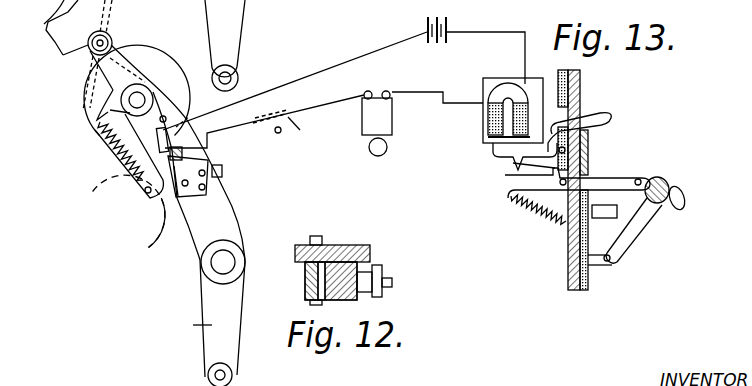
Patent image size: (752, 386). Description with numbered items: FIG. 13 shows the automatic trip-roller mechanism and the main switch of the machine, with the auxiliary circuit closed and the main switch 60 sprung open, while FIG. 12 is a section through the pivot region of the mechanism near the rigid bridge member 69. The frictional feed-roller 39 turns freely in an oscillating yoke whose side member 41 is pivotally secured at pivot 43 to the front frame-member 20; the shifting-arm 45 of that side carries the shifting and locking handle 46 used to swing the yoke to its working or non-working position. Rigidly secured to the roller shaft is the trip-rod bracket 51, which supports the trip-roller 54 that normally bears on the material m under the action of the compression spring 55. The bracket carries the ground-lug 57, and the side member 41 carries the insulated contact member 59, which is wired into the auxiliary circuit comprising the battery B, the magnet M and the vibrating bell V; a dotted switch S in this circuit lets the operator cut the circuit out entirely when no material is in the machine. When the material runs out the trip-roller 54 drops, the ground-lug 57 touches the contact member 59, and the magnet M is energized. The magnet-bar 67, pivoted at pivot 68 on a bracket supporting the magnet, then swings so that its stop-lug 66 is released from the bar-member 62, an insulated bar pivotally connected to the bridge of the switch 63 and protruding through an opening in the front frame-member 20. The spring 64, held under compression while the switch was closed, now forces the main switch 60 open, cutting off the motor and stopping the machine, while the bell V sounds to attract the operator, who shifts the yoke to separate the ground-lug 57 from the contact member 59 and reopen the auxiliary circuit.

In FIG. 13, the material m is at (110, 10).
In FIG. 13, the trip-roller 54 is at (66, 37).
In FIG. 13, the trip-rod bracket 51 is at (112, 67).
In FIG. 13, the frictional feed-roller 39 is at (158, 65).
In FIG. 13, the shifting-arm 45 is at (235, 37).
In FIG. 13, the shifting and locking handle 46 is at (240, 68).
In FIG. 13, the side member of yoke-member 41 is at (213, 210).
In FIG. 12, the side member of yoke-member 41 is at (352, 248).
In FIG. 13, the pivot 43 is at (217, 265).
In FIG. 13, the ground-lug 57 is at (178, 228).
In FIG. 13, the compression spring 55 is at (132, 177).
In FIG. 13, the contact member 59 is at (207, 148).
In FIG. 13, the switch S is at (279, 132).
In FIG. 13, the battery B is at (476, 42).
In FIG. 13, the vibrating bell V is at (380, 122).
In FIG. 13, the magnet M is at (483, 122).
In FIG. 13, the magnet-bar 67 is at (495, 143).
In FIG. 13, the stop-lug of magnet-bar 66 is at (513, 163).
In FIG. 13, the pivot of magnet-bar 68 is at (589, 142).
In FIG. 13, the front frame-member 20 is at (582, 107).
In FIG. 13, the bar-member 62 is at (612, 178).
In FIG. 13, the spring 64 is at (538, 218).
In FIG. 13, the bridge of the switch 63 is at (652, 178).
In FIG. 13, the main switch 60 is at (623, 243).
In FIG. 12, the rigid bridge member 69 is at (328, 297).